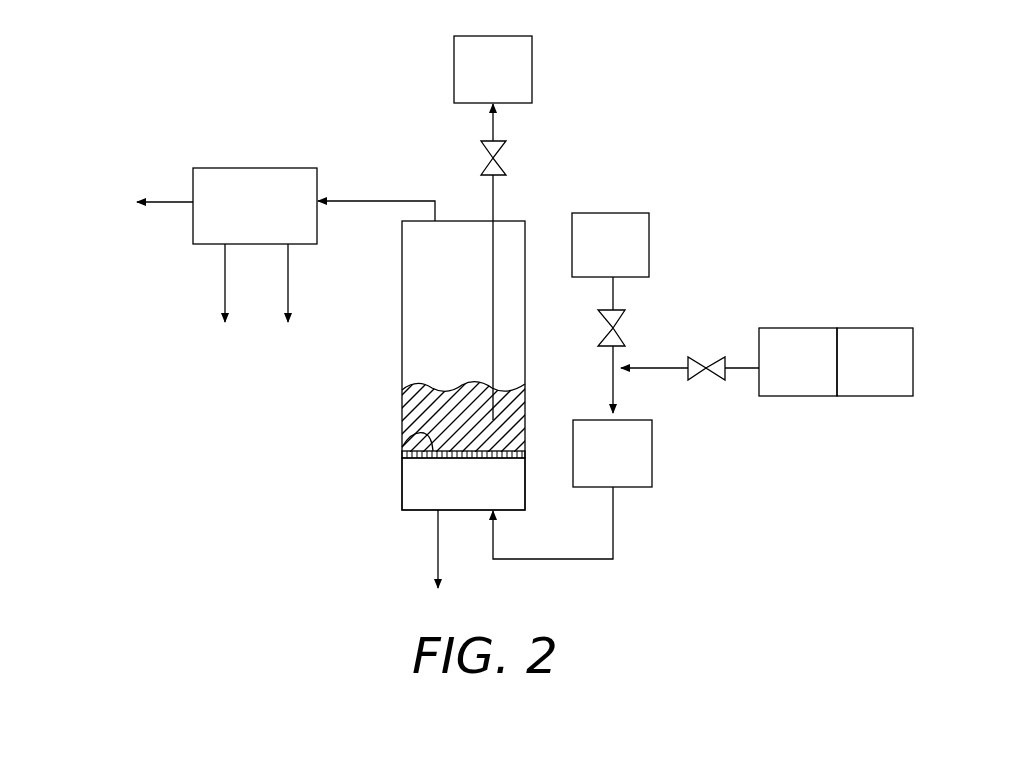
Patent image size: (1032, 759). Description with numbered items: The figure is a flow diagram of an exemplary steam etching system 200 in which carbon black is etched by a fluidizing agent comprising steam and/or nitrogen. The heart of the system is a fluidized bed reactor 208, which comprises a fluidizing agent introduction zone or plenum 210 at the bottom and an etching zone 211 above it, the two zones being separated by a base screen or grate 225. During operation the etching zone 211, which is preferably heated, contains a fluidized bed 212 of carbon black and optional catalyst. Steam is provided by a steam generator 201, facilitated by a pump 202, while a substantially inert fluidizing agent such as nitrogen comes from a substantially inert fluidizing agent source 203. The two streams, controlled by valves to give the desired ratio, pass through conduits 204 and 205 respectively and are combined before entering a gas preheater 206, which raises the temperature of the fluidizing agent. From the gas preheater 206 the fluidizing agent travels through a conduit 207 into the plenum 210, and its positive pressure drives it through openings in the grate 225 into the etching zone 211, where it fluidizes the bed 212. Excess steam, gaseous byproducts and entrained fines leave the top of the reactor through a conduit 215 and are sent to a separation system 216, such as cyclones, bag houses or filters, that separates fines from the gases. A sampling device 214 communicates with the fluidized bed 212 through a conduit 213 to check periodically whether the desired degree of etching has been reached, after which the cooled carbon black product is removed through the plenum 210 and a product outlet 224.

The steam etching system 200 is at (710, 177).
The steam generator 201 is at (818, 376).
The pump 202 is at (895, 376).
The substantially inert fluidizing agent source 203 is at (630, 256).
The conduit 204 is at (613, 357).
The conduit 205 is at (658, 368).
The gas preheater 206 is at (632, 464).
The conduit 207 is at (540, 559).
The fluidized bed reactor 208 is at (315, 395).
The fluidizing agent introduction zone or plenum 210 is at (479, 491).
The etching zone 211 is at (462, 292).
The fluidized bed 212 is at (474, 421).
The conduit 213 is at (493, 195).
The sampling device 214 is at (513, 82).
The conduit 215 is at (376, 201).
The separation system 216 is at (275, 214).
The product outlet 224 is at (438, 550).
The base screen or grate 225 is at (402, 443).